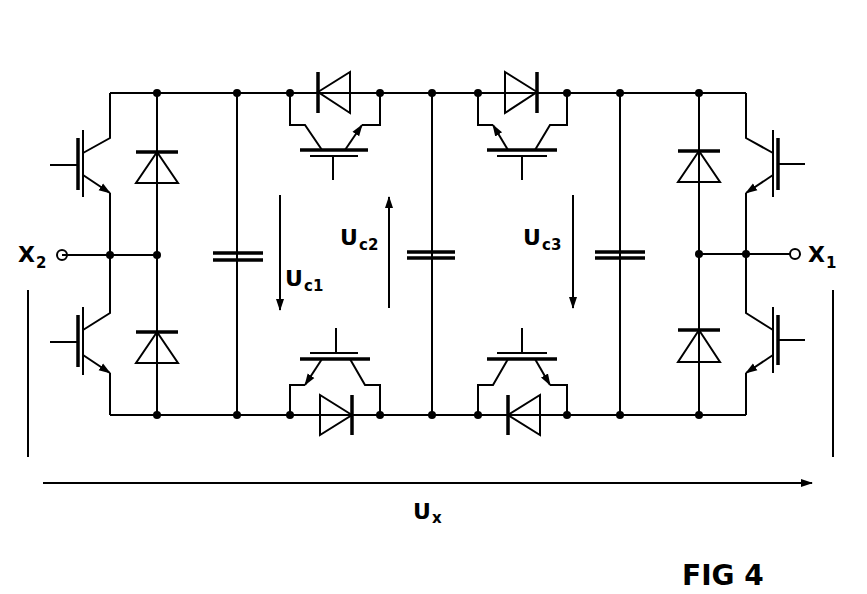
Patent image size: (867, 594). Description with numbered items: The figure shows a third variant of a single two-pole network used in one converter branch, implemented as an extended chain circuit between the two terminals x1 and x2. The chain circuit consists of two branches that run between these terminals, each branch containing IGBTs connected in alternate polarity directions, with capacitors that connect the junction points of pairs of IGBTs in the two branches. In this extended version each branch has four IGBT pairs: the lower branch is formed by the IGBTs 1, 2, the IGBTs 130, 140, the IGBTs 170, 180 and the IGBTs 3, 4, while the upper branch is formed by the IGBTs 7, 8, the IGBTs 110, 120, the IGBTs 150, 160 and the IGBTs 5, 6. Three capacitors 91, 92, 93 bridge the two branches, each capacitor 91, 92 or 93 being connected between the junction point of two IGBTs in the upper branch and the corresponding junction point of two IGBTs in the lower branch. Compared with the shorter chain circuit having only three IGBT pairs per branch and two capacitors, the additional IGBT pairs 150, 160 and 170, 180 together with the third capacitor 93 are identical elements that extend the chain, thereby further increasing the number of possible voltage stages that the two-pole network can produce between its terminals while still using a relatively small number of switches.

The IGBT 1 is at (78, 352).
The IGBT 2 is at (178, 355).
The IGBT 3 is at (782, 352).
The IGBT 4 is at (680, 352).
The IGBT 5 is at (780, 150).
The IGBT 6 is at (678, 175).
The IGBT 7 is at (78, 152).
The IGBT 8 is at (174, 175).
The capacitor 91 is at (228, 252).
The capacitor 92 is at (442, 258).
The capacitor 93 is at (612, 250).
The IGBT 110 is at (322, 155).
The IGBT 120 is at (340, 74).
The IGBT 130 is at (316, 352).
The IGBT 140 is at (330, 430).
The IGBT 150 is at (505, 152).
The IGBT 160 is at (503, 72).
The IGBT 170 is at (540, 353).
The IGBT 180 is at (528, 430).